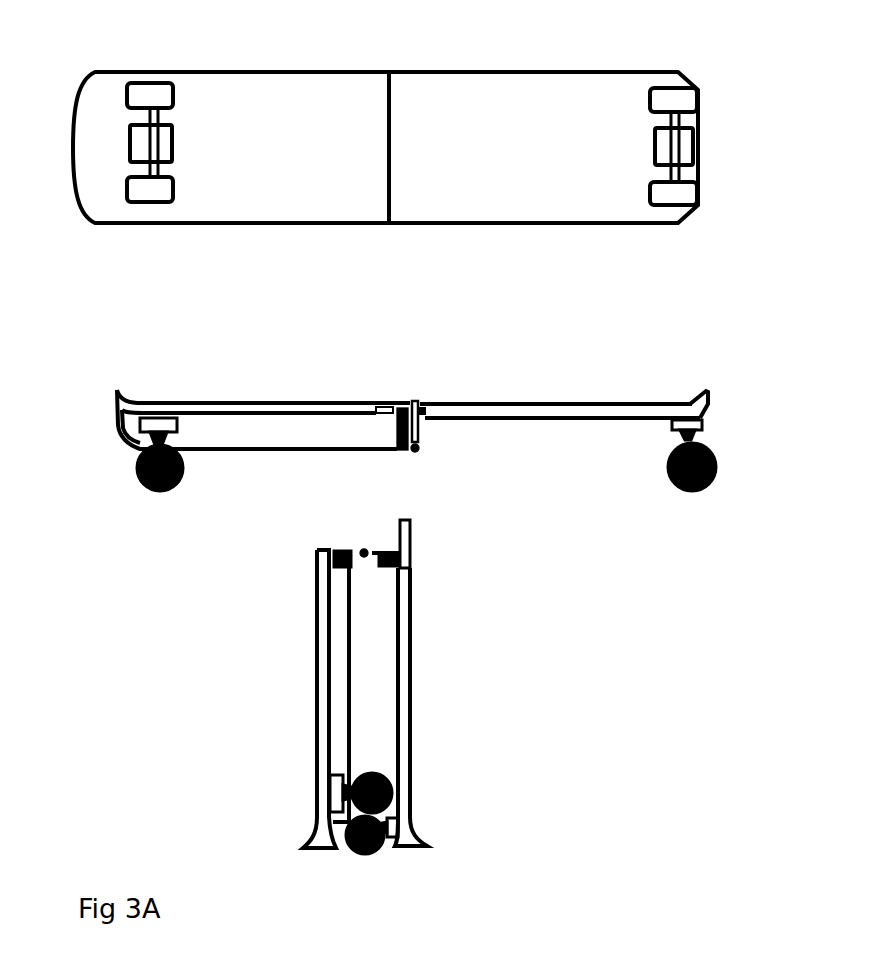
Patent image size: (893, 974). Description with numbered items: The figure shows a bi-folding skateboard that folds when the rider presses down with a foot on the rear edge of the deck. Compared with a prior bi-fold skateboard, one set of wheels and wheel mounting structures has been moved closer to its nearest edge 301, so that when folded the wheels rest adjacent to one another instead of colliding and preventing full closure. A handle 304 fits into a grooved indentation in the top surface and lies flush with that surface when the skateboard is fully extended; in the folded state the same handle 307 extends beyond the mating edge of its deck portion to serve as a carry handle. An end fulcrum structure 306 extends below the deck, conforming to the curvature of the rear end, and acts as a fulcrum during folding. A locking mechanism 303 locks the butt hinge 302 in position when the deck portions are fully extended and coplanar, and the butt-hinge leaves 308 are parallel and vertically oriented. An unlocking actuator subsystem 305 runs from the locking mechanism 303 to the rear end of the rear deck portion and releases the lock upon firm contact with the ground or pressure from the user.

The nearest edge 301 is at (723, 173).
The butt hinge 302 is at (398, 470).
The locking mechanism 303 is at (372, 443).
The handle 304 is at (378, 409).
The unlocking actuator subsystem 305 is at (127, 461).
The end fulcrum structure 306 is at (229, 427).
The handle 307 is at (433, 544).
The butt-hinge leaves 308 is at (459, 441).